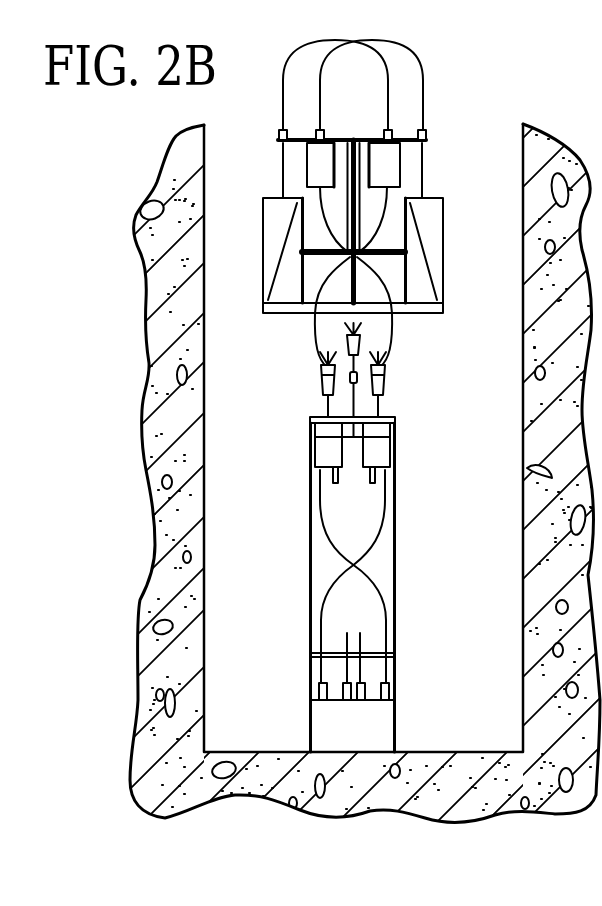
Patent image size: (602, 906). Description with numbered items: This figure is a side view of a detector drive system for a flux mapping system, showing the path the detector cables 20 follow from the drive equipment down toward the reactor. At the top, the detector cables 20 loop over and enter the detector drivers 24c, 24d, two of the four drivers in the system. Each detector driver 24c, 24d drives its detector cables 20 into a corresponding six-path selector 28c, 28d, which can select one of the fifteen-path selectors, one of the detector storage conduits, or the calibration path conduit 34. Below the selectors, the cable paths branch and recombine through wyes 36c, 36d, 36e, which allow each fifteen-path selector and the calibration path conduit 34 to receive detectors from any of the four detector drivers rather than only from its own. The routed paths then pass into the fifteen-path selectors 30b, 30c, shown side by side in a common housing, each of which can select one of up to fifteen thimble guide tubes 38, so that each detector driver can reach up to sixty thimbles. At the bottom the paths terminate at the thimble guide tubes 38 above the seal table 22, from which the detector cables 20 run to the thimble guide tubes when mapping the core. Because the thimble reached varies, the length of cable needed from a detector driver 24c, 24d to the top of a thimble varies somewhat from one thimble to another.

The detector cables 20 is at (418, 53).
The seal table 22 is at (320, 727).
The detector driver 24c is at (276, 210).
The detector driver 24d is at (433, 214).
The 6-path selector 28c is at (420, 152).
The 6-path selector 28d is at (305, 150).
The 15-path selector 30b is at (322, 453).
The 15-path selector 30c is at (383, 453).
The calibration path conduit 34 is at (350, 378).
The wye 36c is at (320, 391).
The wye 36d is at (388, 391).
The wye 36e is at (358, 343).
The thimble guide tubes 38 is at (296, 671).